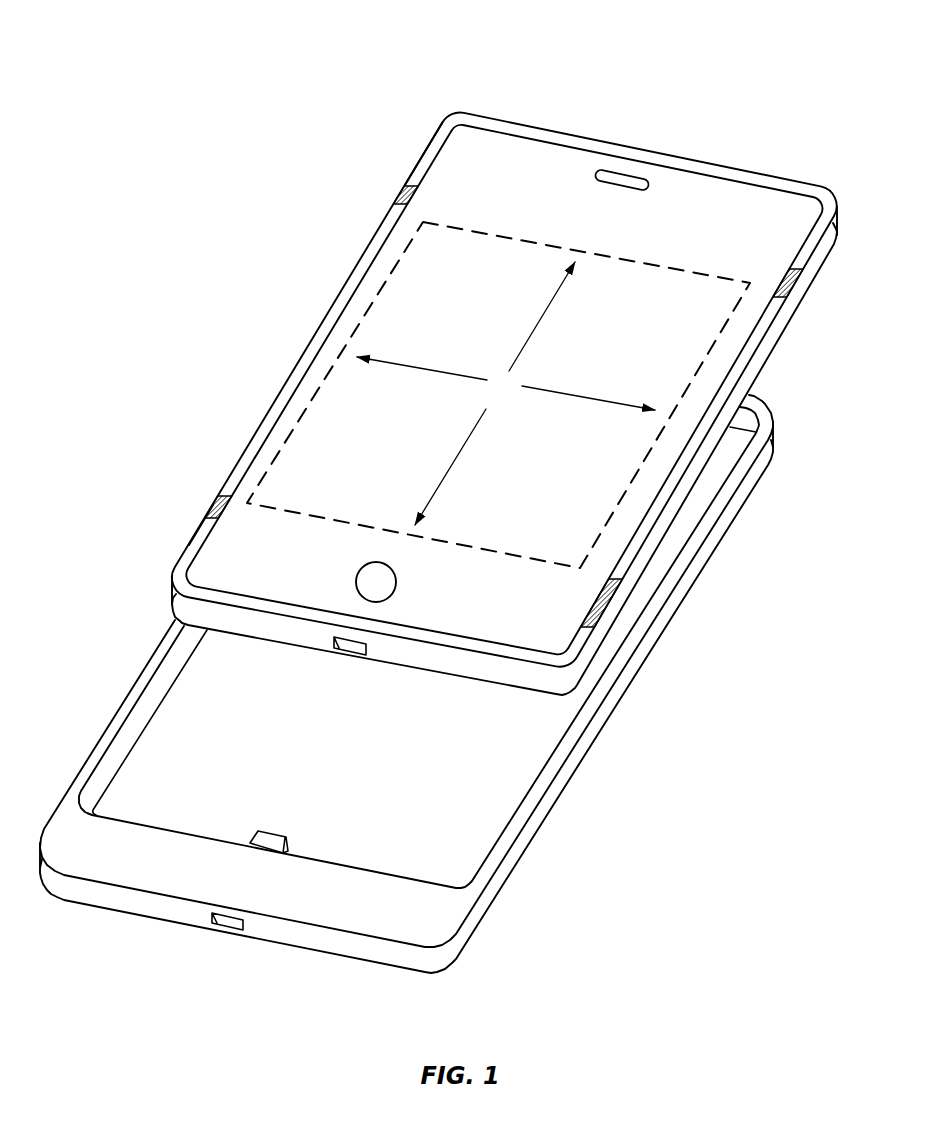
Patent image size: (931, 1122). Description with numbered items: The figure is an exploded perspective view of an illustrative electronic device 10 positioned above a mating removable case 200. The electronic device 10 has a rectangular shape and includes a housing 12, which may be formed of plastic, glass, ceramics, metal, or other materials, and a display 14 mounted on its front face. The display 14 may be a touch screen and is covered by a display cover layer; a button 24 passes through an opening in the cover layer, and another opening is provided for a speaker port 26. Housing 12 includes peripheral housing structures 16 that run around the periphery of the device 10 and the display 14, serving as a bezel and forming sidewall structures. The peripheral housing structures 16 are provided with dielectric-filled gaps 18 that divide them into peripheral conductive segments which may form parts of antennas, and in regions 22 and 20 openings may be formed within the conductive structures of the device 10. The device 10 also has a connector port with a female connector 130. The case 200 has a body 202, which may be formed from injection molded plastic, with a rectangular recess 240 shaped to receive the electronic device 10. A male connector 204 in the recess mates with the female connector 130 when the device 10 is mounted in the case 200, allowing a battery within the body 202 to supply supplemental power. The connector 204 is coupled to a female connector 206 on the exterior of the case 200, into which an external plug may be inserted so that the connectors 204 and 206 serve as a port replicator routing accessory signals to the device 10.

The electronic device 10 is at (519, 381).
The housing 12 is at (519, 412).
The display 14 is at (523, 178).
The peripheral housing structures 16 is at (491, 683).
The gaps 18 is at (402, 195).
The region 20 is at (190, 513).
The region 22 is at (453, 104).
The button 24 is at (379, 603).
The speaker port 26 is at (627, 172).
The female connector 130 is at (350, 656).
The case 200 is at (406, 691).
The body 202 is at (450, 950).
The male connector 204 is at (272, 831).
The female connector 206 is at (227, 931).
The rectangular recess 240 is at (142, 769).